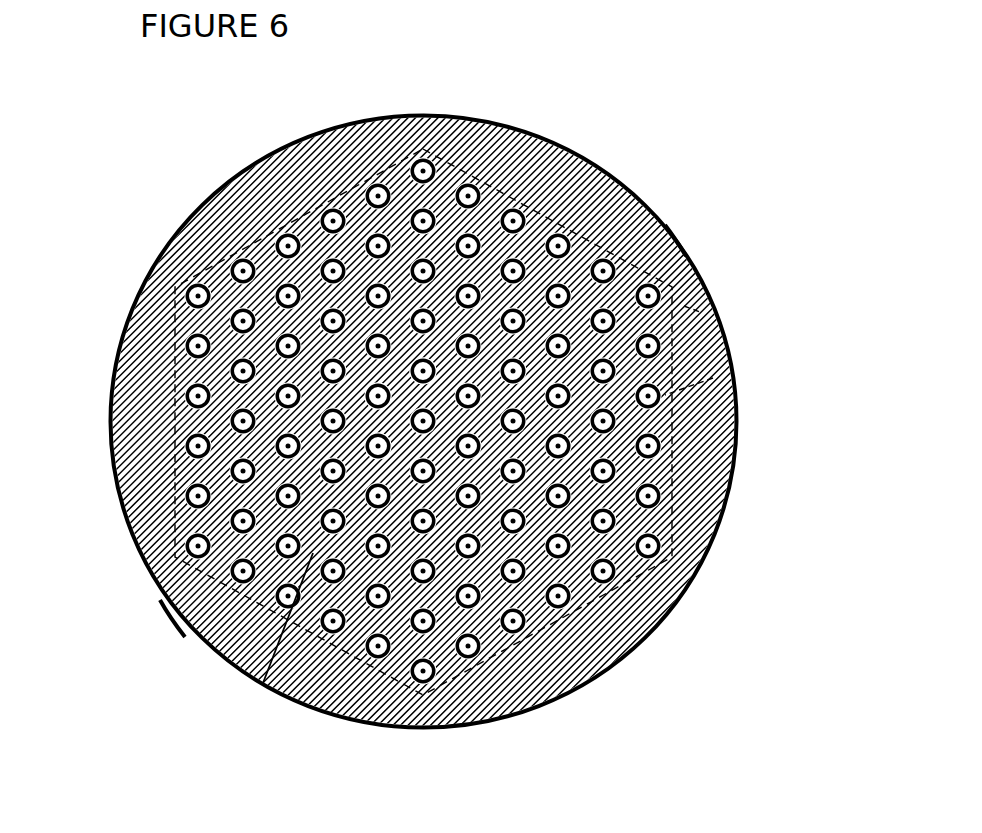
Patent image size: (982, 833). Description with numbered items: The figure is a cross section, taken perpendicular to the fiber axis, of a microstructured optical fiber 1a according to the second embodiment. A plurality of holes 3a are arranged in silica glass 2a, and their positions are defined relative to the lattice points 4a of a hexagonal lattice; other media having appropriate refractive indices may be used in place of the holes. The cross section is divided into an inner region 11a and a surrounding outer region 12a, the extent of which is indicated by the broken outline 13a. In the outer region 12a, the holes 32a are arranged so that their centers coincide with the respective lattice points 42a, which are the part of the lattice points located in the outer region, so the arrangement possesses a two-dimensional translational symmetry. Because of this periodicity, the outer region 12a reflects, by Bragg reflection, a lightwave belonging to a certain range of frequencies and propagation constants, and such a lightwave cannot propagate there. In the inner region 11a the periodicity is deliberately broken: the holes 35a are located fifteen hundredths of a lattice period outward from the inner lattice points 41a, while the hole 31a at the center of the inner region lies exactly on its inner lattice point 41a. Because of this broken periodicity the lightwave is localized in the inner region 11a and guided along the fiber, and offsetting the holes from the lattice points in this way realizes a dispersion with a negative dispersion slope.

The optical fiber 1a is at (647, 207).
The silica glass 2a is at (680, 247).
The holes 3a is at (708, 300).
The lattice points 4a is at (712, 366).
The inner region 11a is at (365, 450).
The outer region 12a is at (263, 683).
The hole arrangement region 13a is at (683, 560).
The hole at the center of the inner region 31a is at (412, 418).
The holes in the outer region 32a is at (231, 522).
The holes in the inner region 35a is at (420, 356).
The inner lattice points 41a is at (368, 388).
The lattice points in the outer region 42a is at (177, 627).